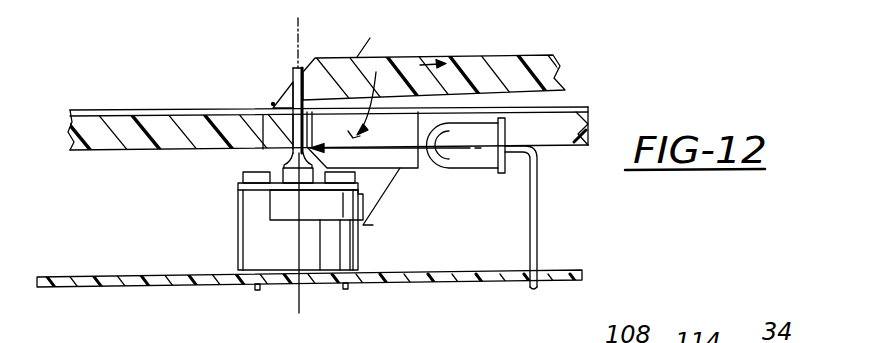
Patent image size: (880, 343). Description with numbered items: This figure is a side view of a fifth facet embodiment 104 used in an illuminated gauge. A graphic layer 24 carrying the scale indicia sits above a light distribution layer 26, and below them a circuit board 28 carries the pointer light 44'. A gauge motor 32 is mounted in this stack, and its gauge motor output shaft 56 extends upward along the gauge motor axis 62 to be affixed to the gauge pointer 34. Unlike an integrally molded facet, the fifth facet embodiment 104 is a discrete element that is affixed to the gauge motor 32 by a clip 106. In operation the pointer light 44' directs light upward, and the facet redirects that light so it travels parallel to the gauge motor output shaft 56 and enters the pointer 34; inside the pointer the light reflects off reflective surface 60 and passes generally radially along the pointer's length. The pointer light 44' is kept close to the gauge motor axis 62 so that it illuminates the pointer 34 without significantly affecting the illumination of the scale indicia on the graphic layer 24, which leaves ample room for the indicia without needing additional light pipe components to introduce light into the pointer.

The graphic layer 24 is at (98, 110).
The light distribution layer 26 is at (107, 150).
The circuit board 28 is at (82, 287).
The gauge motor 32 is at (238, 250).
The gauge pointer 34 is at (494, 54).
The pointer light 44' is at (482, 203).
The gauge motor output shaft 56 is at (293, 68).
The reflective surface 60 is at (274, 103).
The gauge motor axis 62 is at (299, 296).
The fifth facet embodiment 104 is at (380, 76).
The clip 106 is at (278, 202).